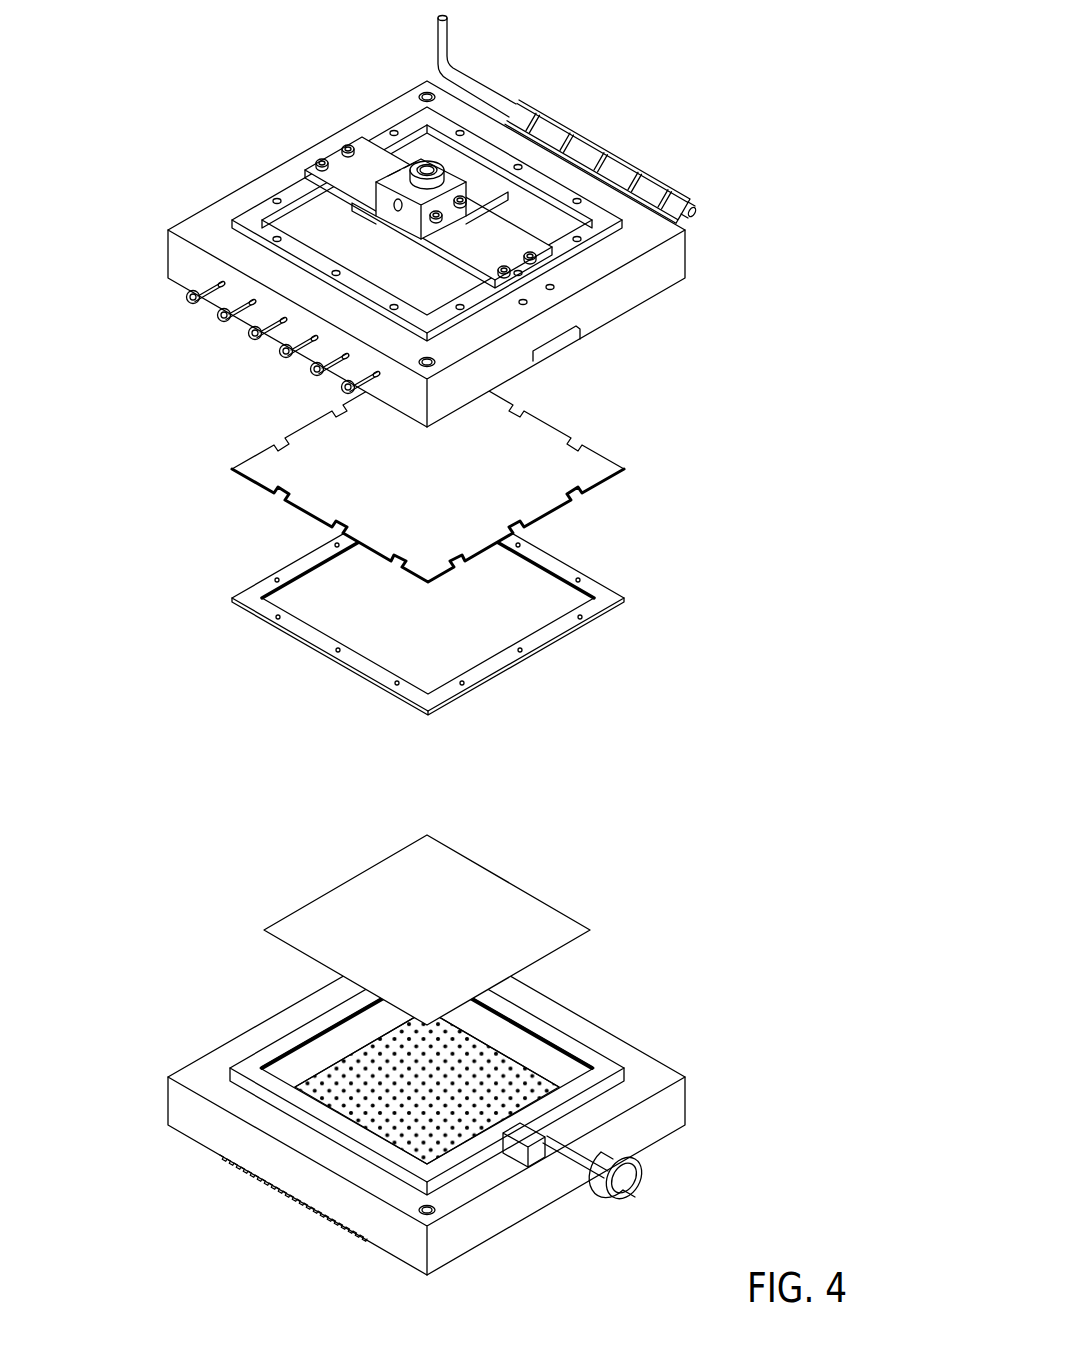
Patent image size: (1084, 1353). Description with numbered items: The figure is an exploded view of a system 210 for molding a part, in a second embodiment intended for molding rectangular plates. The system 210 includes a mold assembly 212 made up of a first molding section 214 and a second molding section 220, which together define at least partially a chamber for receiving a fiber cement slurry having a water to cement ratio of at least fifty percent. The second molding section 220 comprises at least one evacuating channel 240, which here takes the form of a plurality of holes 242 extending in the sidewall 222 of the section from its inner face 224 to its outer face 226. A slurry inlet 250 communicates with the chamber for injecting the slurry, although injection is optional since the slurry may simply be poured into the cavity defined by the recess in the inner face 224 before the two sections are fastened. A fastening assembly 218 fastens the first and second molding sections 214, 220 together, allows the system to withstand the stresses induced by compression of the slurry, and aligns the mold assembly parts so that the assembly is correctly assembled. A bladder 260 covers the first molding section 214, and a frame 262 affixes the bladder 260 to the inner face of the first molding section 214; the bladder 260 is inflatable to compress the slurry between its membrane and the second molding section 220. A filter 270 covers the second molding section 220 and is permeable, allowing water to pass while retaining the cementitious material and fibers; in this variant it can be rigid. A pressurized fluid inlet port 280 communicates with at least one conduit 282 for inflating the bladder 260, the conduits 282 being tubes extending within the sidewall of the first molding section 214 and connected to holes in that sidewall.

The system 210 is at (828, 61).
The mold assembly 212 is at (711, 342).
The first molding section 214 is at (389, 222).
The fastening assembly 218 is at (343, 167).
The second molding section 220 is at (399, 1104).
The sidewall 222 is at (325, 1077).
The inner face 224 is at (498, 1027).
The outer face 226 is at (287, 1207).
The evacuating channel 240 is at (503, 1087).
The holes 242 is at (350, 1102).
The slurry inlet 250 is at (632, 1185).
The bladder 260 is at (550, 438).
The frame 262 is at (605, 597).
The filter 270 is at (507, 900).
The pressurized fluid inlet port 280 is at (443, 33).
The conduit 282 is at (672, 202).